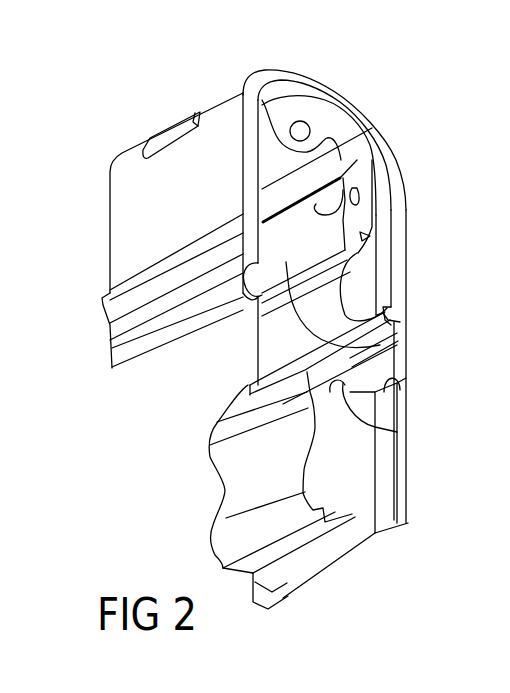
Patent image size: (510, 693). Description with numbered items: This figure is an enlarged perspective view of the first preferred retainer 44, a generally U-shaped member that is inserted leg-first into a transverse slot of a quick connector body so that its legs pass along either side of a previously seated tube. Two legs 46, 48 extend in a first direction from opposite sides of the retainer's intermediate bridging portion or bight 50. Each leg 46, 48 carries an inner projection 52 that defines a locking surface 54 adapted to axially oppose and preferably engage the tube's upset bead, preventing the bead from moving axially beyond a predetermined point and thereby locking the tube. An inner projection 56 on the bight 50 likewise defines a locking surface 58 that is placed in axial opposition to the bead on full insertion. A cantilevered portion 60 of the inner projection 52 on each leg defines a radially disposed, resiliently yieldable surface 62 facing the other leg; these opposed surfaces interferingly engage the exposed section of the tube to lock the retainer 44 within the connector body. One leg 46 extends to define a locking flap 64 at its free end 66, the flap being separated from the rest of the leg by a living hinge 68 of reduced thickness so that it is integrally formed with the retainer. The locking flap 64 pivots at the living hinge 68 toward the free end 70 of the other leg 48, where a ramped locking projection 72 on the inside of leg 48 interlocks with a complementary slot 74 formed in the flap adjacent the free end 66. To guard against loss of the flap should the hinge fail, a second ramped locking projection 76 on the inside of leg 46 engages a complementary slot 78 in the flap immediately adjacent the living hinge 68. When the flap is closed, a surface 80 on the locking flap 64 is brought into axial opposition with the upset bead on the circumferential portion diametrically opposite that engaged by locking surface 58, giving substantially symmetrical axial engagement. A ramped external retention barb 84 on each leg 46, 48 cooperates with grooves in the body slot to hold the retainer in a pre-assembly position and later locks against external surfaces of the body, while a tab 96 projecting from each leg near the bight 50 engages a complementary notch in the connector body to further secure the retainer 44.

The retainer 44 is at (104, 172).
The leg 46 is at (405, 217).
The leg 48 is at (127, 242).
The bight 50 is at (320, 104).
The inner projection 52 is at (262, 190).
The locking surface 54 is at (258, 302).
The inner projection 56 is at (360, 140).
The locking surface 58 is at (345, 104).
The cantilevered portion 60 is at (384, 314).
The resiliently yieldable surface 62 is at (397, 345).
The locking flap 64 is at (408, 458).
The free end 66 is at (358, 550).
The living hinge 68 is at (387, 373).
The free end 70 is at (112, 370).
The ramped locking projection 72 is at (113, 355).
The slot 74 is at (280, 556).
The ramped locking projection 76 is at (238, 393).
The slot 78 is at (375, 432).
The surface 80 is at (358, 495).
The retention barb 84 is at (107, 297).
The tab 96 is at (146, 148).